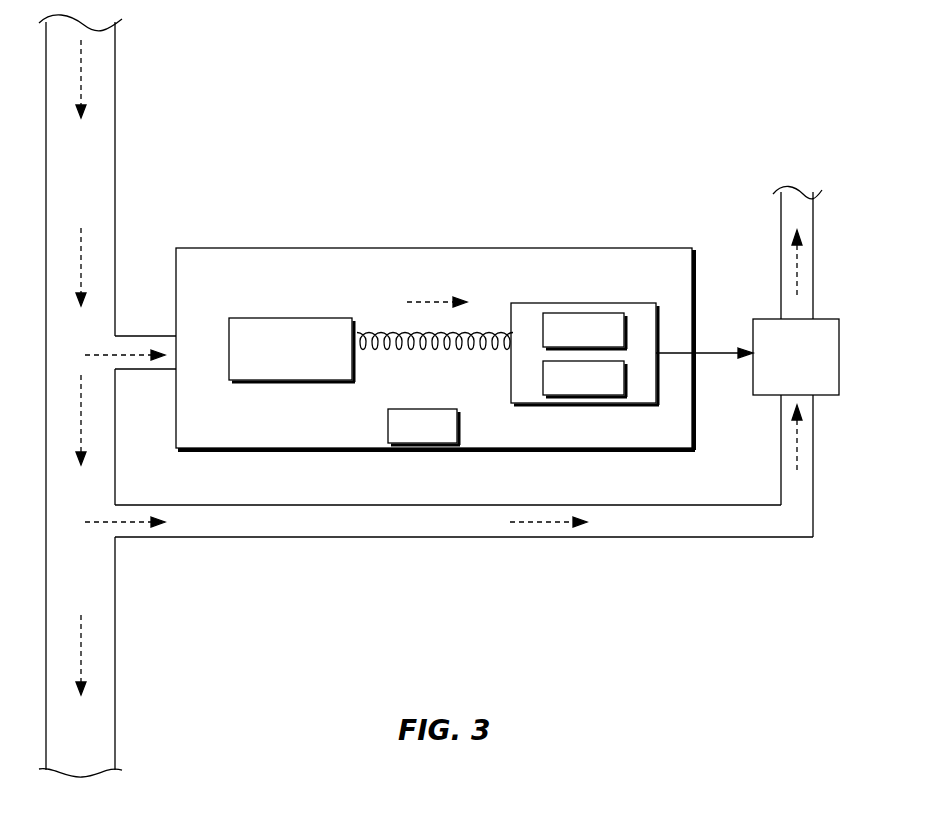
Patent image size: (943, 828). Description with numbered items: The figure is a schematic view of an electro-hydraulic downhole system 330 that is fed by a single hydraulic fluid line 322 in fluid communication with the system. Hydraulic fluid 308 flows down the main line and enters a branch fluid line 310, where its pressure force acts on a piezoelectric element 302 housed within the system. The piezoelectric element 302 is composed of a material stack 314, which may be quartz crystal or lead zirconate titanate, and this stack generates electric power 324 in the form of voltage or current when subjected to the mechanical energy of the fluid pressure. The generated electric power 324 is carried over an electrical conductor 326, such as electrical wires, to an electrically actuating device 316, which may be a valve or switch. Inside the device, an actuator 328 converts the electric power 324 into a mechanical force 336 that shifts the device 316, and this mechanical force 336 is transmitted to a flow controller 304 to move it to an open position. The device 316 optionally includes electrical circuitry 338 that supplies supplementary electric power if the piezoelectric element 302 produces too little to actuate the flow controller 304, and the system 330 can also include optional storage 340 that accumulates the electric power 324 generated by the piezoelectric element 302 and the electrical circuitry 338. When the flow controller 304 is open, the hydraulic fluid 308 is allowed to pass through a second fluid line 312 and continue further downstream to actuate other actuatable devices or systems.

The electro-hydraulic system 330 is at (510, 162).
The hydraulic fluid line 322 is at (116, 212).
The hydraulic fluid 308 is at (118, 355).
The fluid line 310 is at (122, 369).
The fluid line 312 is at (429, 530).
The piezoelectric element 302 is at (292, 336).
The material stack 314 is at (309, 362).
The electric power 324 is at (428, 300).
The electrical conductor 326 is at (452, 350).
The electrically actuating device 316 is at (585, 341).
The actuator 328 is at (602, 341).
The electrical circuitry 338 is at (602, 389).
The storage 340 is at (441, 437).
The mechanical force 336 is at (712, 350).
The flow controller 304 is at (815, 368).